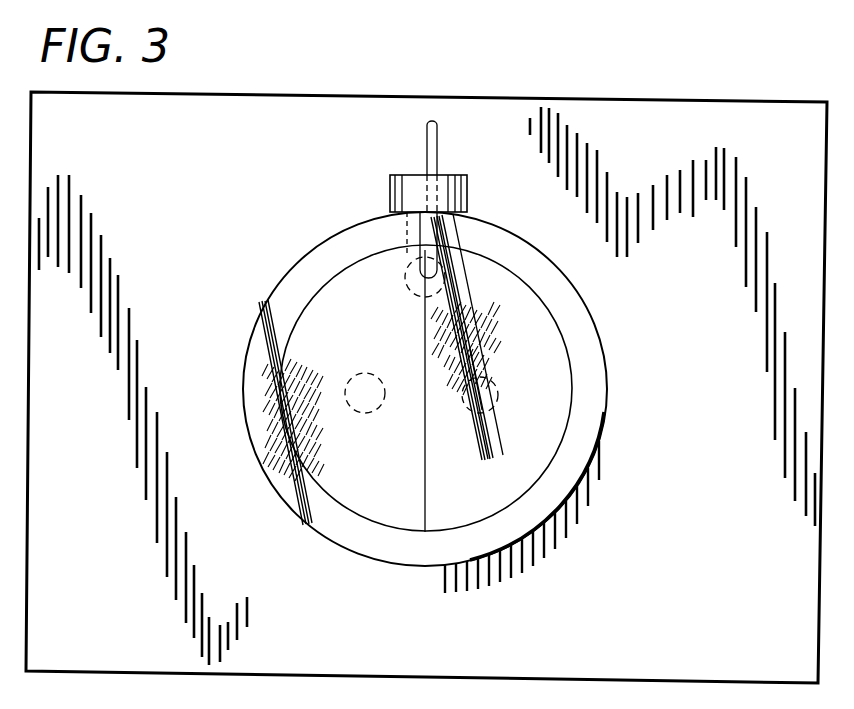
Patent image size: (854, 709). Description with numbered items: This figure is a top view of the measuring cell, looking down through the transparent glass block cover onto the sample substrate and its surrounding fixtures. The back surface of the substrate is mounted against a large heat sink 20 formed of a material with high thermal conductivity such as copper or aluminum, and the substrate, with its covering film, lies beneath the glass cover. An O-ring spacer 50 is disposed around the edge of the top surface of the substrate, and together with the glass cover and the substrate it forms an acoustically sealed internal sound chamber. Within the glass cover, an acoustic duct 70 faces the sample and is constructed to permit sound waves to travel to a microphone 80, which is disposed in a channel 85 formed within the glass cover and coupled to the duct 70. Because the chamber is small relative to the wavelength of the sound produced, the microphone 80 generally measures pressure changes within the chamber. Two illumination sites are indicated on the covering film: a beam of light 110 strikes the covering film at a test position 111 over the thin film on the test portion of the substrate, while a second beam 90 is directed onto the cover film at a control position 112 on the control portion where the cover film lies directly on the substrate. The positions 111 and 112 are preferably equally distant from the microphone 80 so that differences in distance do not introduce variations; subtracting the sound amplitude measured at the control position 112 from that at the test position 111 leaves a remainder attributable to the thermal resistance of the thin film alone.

The heat sink 20 is at (457, 113).
The O-ring spacer 50 is at (298, 268).
The acoustic duct 70 is at (407, 282).
The microphone 80 is at (432, 200).
The channel 85 is at (446, 233).
The beam 90 is at (370, 371).
The beam of light 110 is at (498, 392).
The test position 111 is at (493, 383).
The control position 112 is at (366, 394).